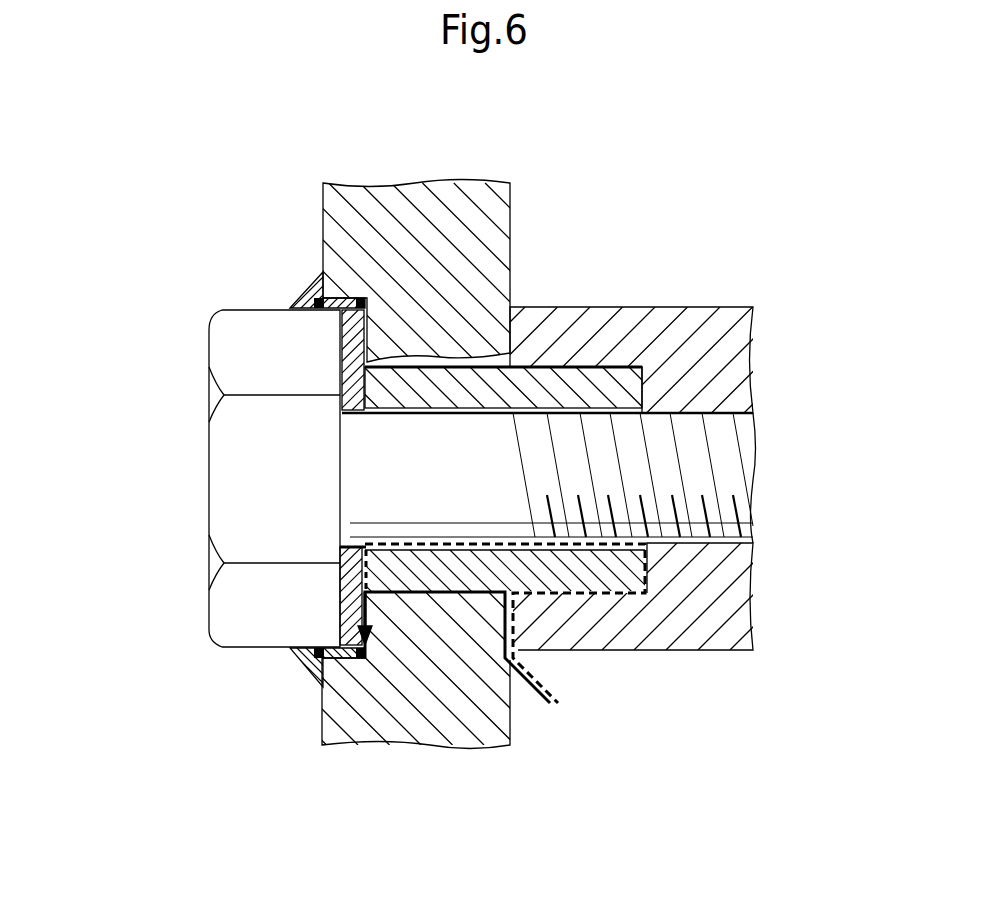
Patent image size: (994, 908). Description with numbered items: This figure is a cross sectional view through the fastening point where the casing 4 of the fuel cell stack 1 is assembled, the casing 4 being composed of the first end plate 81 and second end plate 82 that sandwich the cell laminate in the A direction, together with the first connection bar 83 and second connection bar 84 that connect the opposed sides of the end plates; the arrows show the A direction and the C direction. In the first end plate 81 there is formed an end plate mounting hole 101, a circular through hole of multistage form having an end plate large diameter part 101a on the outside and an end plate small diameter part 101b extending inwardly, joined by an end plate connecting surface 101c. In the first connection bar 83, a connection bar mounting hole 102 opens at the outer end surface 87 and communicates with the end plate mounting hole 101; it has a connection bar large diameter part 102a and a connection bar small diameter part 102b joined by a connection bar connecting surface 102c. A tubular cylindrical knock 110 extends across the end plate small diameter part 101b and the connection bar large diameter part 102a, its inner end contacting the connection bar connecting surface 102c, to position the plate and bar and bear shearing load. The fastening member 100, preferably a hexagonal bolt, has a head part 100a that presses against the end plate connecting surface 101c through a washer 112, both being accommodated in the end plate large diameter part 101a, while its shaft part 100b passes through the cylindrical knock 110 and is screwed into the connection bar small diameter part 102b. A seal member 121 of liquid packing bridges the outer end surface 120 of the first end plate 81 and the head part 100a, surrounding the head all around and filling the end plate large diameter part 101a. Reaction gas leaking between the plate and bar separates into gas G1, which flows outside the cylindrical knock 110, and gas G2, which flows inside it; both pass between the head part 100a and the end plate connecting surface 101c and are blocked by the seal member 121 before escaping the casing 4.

The fuel cell stack 1 is at (405, 498).
The casing 4 is at (405, 498).
The first end plate 81 is at (515, 247).
The second end plate 82 is at (515, 247).
The first connection bar 83 is at (683, 596).
The second connection bar 84 is at (750, 593).
The outer end surface 87 is at (500, 635).
The fastening member 100 is at (405, 532).
The head part 100a is at (208, 413).
The shaft part 100b is at (497, 430).
The end plate mounting hole 101 is at (401, 656).
The end plate large diameter part 101a is at (328, 653).
The end plate small diameter part 101b is at (430, 661).
The end plate connecting surface 101c is at (350, 613).
The connection bar mounting hole 102 is at (539, 678).
The connection bar large diameter part 102a is at (553, 596).
The connection bar small diameter part 102b is at (680, 548).
The connection bar connecting surface 102c is at (620, 596).
The cylindrical knock 110 is at (612, 378).
The washer 112 is at (353, 362).
The outer end surface 120 is at (322, 215).
The seal member 121 is at (308, 297).
The reaction gas G1 is at (547, 703).
The reaction gas G2 is at (558, 703).
The A direction A is at (850, 860).
The C direction C is at (860, 758).